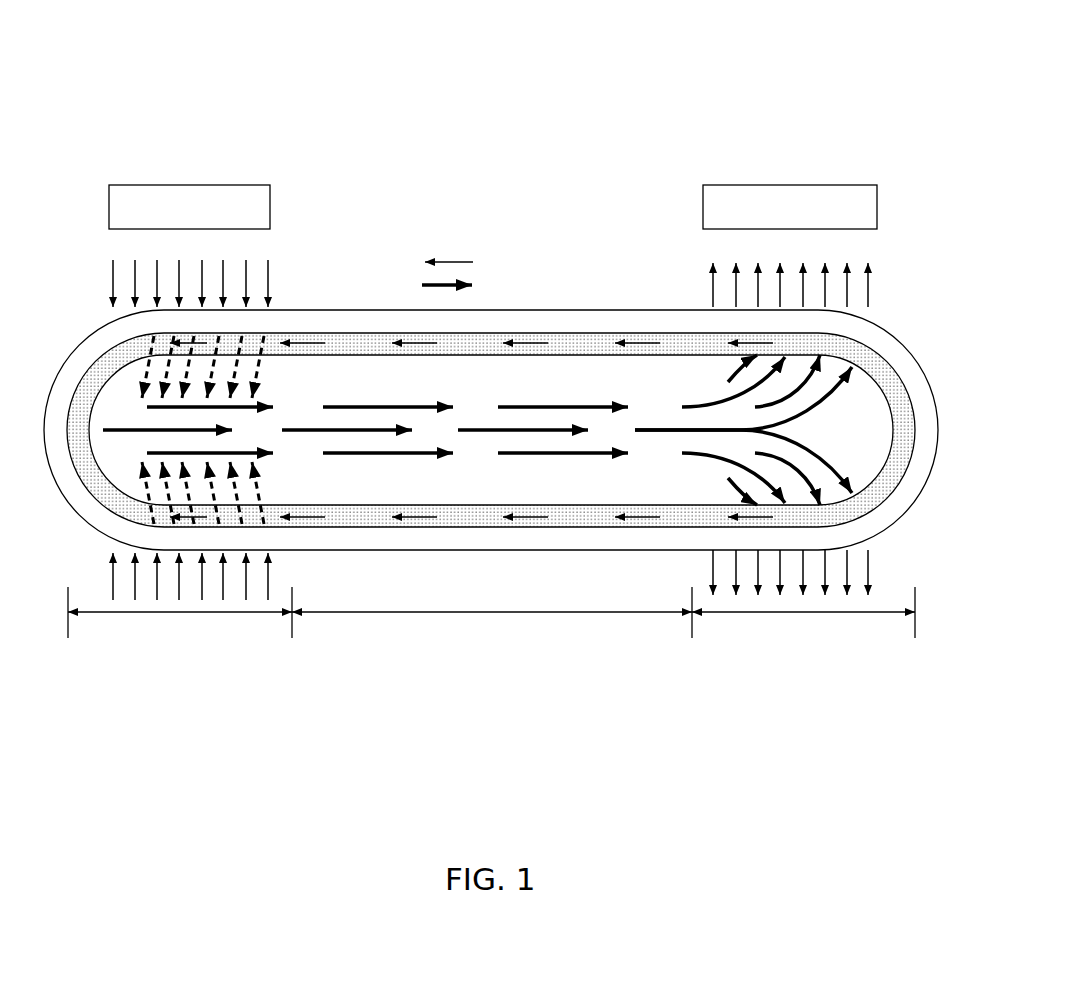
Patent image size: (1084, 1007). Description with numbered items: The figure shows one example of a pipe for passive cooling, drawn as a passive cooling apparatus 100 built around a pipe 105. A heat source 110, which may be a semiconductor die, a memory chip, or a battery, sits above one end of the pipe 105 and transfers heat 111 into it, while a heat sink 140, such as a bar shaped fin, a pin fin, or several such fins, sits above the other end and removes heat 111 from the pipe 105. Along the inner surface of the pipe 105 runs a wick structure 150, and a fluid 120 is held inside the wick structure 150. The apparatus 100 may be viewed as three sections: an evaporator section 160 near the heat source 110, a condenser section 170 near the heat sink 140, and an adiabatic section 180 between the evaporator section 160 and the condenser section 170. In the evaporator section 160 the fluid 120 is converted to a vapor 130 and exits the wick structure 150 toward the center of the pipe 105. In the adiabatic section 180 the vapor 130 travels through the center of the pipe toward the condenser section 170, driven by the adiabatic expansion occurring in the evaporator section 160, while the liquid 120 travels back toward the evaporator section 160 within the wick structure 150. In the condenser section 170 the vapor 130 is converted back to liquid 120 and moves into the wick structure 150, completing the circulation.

The passive cooling apparatus 100 is at (630, 79).
The pipe 105 is at (927, 352).
The heat source 110 is at (197, 185).
The heat 111 is at (270, 276).
The fluid 120 is at (452, 262).
The vapor 130 is at (470, 282).
The heat sink 140 is at (803, 185).
The wick structure 150 is at (484, 530).
The evaporator section 160 is at (190, 627).
The condenser section 170 is at (794, 627).
The adiabatic section 180 is at (503, 627).